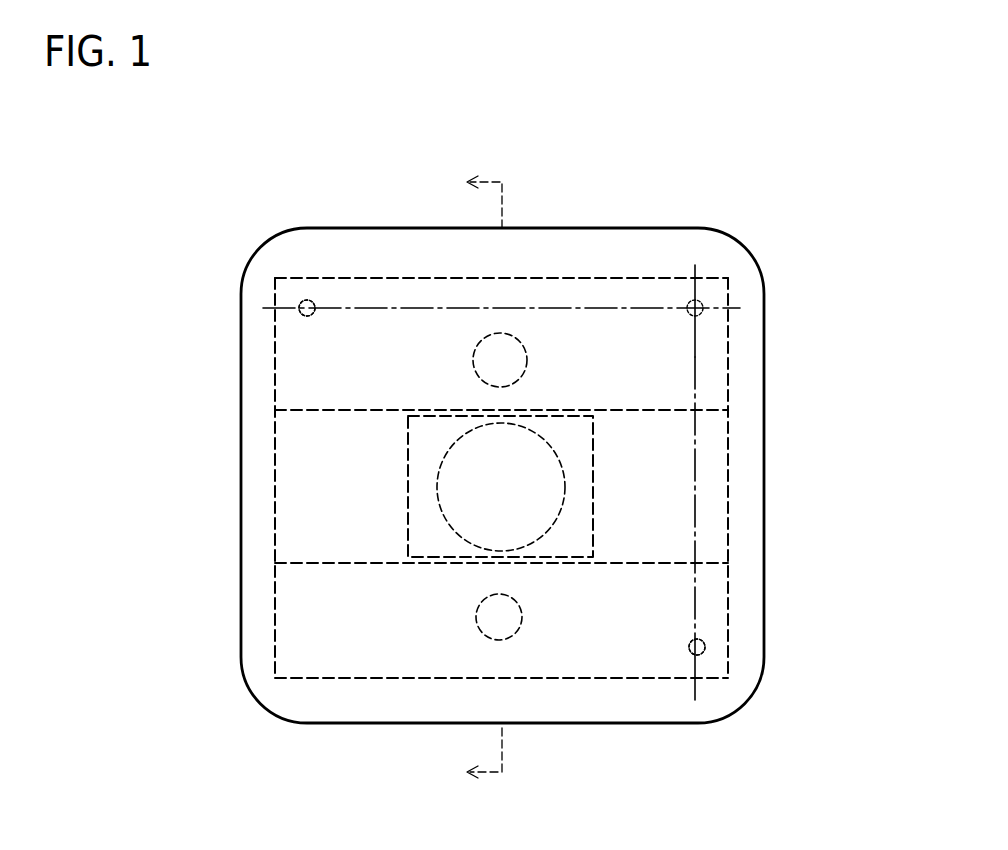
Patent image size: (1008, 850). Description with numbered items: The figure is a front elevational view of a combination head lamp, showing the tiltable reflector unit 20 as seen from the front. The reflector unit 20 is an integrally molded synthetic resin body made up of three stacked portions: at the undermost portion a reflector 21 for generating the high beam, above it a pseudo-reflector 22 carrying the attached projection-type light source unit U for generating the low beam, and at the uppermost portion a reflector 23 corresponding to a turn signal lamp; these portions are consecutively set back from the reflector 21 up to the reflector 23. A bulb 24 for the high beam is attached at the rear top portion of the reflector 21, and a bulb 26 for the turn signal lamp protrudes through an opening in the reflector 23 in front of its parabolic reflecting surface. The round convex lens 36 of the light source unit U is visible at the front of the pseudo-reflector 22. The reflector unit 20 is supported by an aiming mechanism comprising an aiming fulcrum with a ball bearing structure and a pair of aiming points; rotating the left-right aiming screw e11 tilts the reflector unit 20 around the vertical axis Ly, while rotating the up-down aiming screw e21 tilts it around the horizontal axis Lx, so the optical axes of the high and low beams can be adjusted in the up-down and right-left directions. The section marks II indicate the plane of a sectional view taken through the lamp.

The reflector unit 20 is at (173, 337).
The reflector 21 is at (333, 621).
The pseudo-reflector 22 is at (328, 497).
The reflector 23 is at (318, 362).
The bulb 24 is at (517, 633).
The bulb 26 is at (515, 335).
The convex lens 36 is at (540, 513).
The projection-type light source unit U is at (590, 478).
The horizontally tilted axis Lx is at (410, 307).
The vertically tilted axis Ly is at (697, 355).
The left-right aiming screw e11 is at (300, 305).
The up-down aiming screw e21 is at (704, 652).
The section line II is at (484, 479).